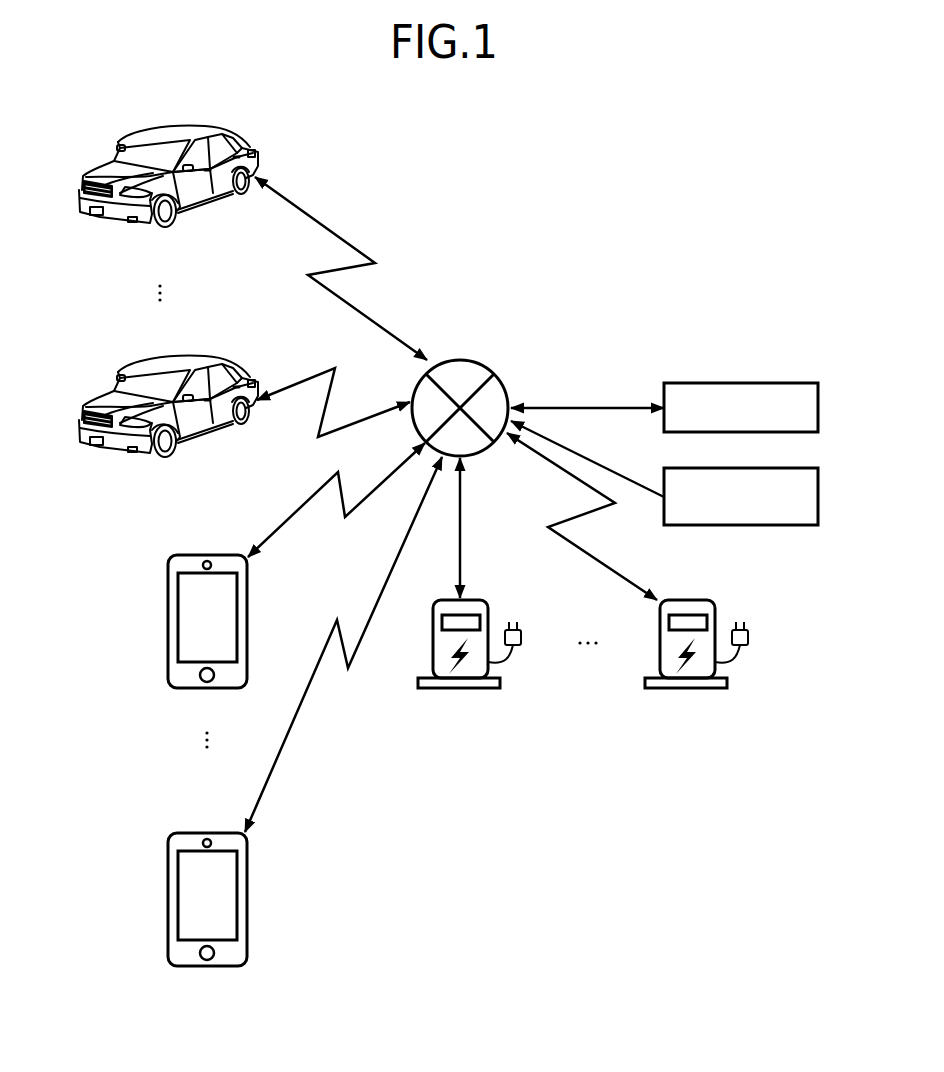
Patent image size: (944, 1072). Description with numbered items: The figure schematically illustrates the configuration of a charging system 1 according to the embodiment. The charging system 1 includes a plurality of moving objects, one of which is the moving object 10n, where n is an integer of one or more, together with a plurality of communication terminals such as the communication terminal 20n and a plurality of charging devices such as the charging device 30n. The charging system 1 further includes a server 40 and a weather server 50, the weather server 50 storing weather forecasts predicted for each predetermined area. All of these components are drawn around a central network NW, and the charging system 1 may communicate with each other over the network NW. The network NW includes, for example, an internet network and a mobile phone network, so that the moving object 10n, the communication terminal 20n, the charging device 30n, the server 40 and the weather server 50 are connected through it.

The charging system 1 is at (684, 281).
The moving object 10n is at (188, 124).
The communication terminal 20n is at (180, 833).
The charging device 30n is at (474, 599).
The server 40 is at (760, 383).
The weather server 50 is at (760, 468).
The network NW is at (455, 360).